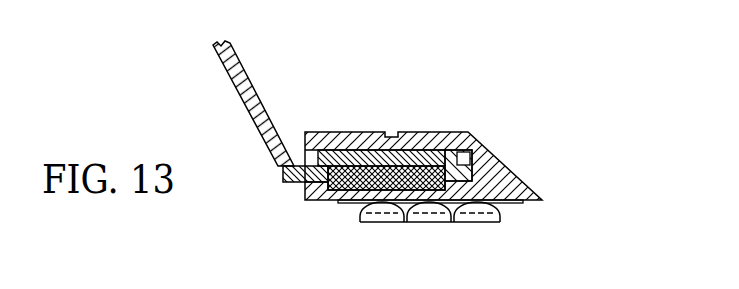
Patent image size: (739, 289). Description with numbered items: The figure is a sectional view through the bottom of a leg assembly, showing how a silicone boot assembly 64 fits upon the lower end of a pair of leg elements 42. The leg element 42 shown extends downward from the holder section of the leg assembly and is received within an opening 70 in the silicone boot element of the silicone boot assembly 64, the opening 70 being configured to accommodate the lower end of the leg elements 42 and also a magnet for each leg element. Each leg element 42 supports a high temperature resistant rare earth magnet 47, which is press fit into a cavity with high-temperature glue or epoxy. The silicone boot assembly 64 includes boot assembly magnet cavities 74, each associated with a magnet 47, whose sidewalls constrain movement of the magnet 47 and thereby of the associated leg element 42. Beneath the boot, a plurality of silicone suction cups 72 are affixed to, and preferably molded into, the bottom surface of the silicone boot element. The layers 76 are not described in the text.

The leg element 42 is at (246, 72).
The high temperature resistant rare earth magnet 47 is at (357, 196).
The silicone boot assembly 64 is at (502, 170).
The opening 70 is at (288, 163).
The silicone suction cups 72 is at (475, 224).
The boot assembly magnet cavity 74 is at (407, 186).
The cladding layers 76 is at (347, 162).